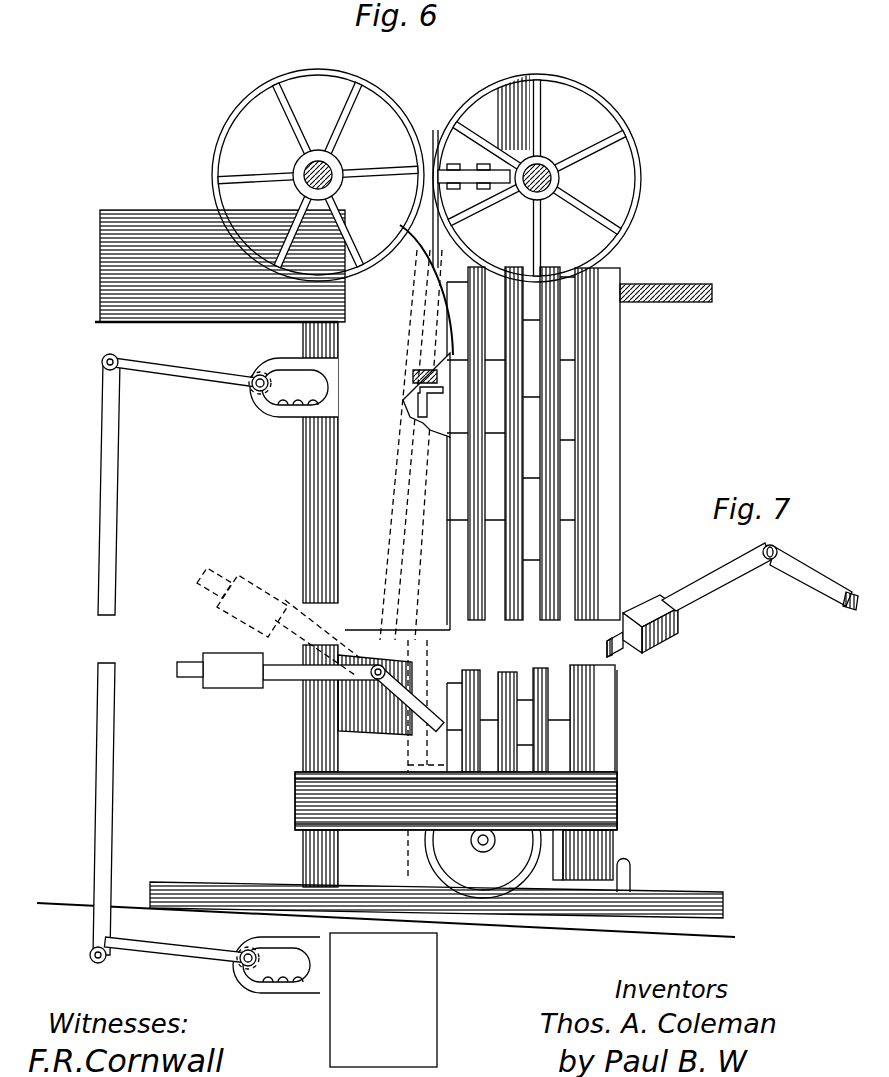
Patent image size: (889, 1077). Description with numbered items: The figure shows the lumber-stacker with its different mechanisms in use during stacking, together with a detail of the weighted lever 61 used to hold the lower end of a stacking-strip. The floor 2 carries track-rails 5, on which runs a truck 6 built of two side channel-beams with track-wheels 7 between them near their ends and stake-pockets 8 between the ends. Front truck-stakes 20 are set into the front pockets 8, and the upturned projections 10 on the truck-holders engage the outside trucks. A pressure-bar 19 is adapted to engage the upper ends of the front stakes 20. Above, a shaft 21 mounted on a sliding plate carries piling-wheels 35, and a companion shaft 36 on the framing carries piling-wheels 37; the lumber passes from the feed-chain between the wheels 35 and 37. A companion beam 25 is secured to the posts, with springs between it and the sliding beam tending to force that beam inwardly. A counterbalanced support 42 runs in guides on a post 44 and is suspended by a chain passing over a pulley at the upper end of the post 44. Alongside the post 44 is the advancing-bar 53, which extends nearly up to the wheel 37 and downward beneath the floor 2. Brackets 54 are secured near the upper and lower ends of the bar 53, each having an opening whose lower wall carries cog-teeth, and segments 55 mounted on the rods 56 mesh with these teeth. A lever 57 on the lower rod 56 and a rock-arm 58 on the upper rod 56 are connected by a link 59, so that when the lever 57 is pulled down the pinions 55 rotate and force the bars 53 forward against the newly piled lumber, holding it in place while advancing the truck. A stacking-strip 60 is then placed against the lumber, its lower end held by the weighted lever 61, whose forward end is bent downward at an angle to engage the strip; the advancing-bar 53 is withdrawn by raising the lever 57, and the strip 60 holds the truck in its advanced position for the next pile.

In FIG. 6, the floor 2 is at (642, 927).
In FIG. 6, the track-rails 5 is at (683, 895).
In FIG. 6, the truck 6 is at (456, 801).
In FIG. 6, the track-wheels 7 is at (483, 840).
In FIG. 6, the stake-pockets 8 is at (560, 760).
In FIG. 6, the upturned projections 10 is at (620, 875).
In FIG. 6, the pressure-bar 19 is at (676, 302).
In FIG. 6, the front truck-stakes 20 is at (533, 443).
In FIG. 6, the shaft 21 is at (556, 178).
In FIG. 6, the companion beam 25 is at (474, 143).
In FIG. 6, the piling-wheels 35 is at (638, 152).
In FIG. 6, the shaft 36 is at (332, 170).
In FIG. 6, the piling-wheels 37 is at (249, 105).
In FIG. 6, the counterbalanced support 42 is at (427, 387).
In FIG. 6, the post 44 is at (334, 536).
In FIG. 6, the advancing-bar 53 is at (383, 1000).
In FIG. 6, the brackets 54 is at (322, 408).
In FIG. 6, the segments 55 is at (403, 488).
In FIG. 6, the rod 56 is at (253, 393).
In FIG. 6, the lever 57 is at (132, 930).
In FIG. 6, the rock-arm 58 is at (172, 372).
In FIG. 6, the link 59 is at (100, 510).
In FIG. 6, the stacking-strip 60 is at (370, 642).
In FIG. 6, the weighted lever 61 is at (282, 667).
In FIG. 7, the weighted lever 61 is at (731, 578).